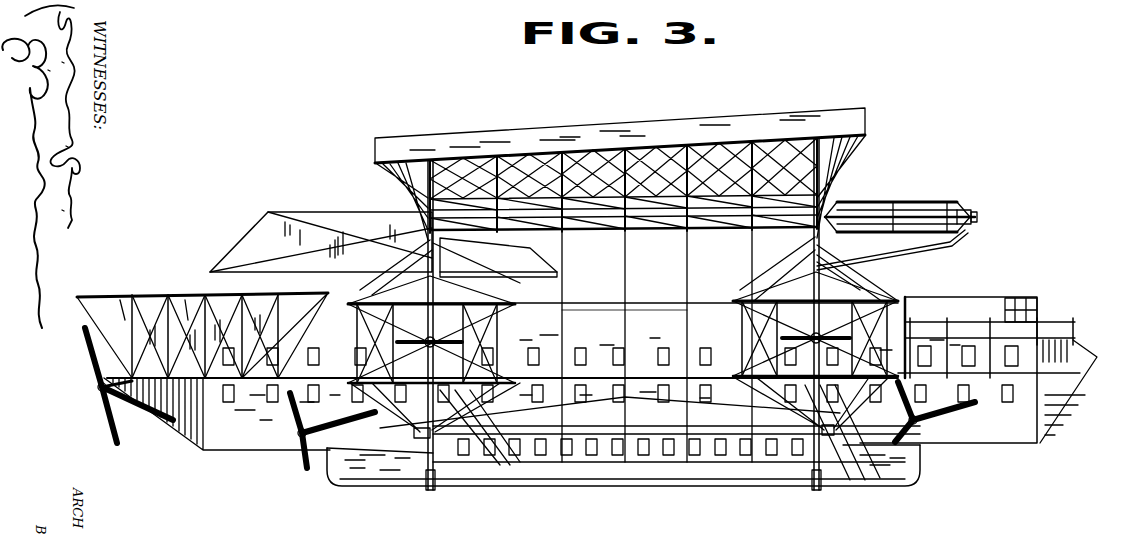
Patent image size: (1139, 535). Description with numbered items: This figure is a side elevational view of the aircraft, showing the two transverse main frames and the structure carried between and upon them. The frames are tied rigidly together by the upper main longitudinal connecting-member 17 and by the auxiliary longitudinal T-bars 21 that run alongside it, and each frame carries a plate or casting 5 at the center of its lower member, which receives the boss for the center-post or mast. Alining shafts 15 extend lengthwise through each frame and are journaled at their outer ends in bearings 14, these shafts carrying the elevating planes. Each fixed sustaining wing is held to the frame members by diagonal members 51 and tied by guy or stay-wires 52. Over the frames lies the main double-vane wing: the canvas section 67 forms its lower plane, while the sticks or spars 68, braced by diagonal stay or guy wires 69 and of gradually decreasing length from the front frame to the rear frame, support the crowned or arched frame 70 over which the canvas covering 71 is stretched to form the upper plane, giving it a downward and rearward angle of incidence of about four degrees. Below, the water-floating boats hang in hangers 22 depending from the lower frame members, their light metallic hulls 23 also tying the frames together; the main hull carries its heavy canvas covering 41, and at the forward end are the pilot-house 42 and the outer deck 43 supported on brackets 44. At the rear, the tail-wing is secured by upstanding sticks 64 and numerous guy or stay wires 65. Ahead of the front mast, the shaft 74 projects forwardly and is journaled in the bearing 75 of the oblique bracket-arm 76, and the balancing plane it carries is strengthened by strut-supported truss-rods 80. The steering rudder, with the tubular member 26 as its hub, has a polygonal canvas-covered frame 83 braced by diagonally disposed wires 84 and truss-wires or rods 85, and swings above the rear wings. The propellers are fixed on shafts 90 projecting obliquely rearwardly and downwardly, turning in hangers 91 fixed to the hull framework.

The canvas covering 71 is at (797, 140).
The crowned or arched frame 70 is at (862, 140).
The sticks or spars 68 is at (660, 152).
The diagonal stay or guy wires 69 is at (742, 152).
The upper main longitudinal connecting-member 17 is at (579, 233).
The canvas section 67 is at (600, 236).
The auxiliary longitudinal T-bars 21 is at (660, 234).
The strut-supported truss-rods 80 is at (880, 202).
The shaft 74 is at (968, 210).
The bearing 75 is at (977, 216).
The bracket-arm 76 is at (912, 246).
The diagonally disposed wires 84 is at (310, 214).
The rudder frame 83 is at (338, 237).
The strut-supported truss-wires or rods 85 is at (388, 245).
The guy or stay wires 65 is at (138, 300).
The upstanding members or sticks 64 is at (190, 296).
The guy or stay-wires 52 is at (380, 290).
The tubular member 26 is at (415, 288).
The alining shafts 15 is at (418, 342).
The bearings 14 is at (428, 358).
The plate or casting 5 is at (490, 345).
The hull covering 41 is at (657, 346).
The brackets 44 is at (930, 366).
The diagonal members 51 is at (745, 335).
The propeller shafts 90 is at (98, 375).
The hangers 91 is at (140, 410).
The hangers 22 is at (430, 490).
The hulls 23 is at (630, 459).
The outer deck 43 is at (958, 297).
The pilot-house 42 is at (1020, 297).